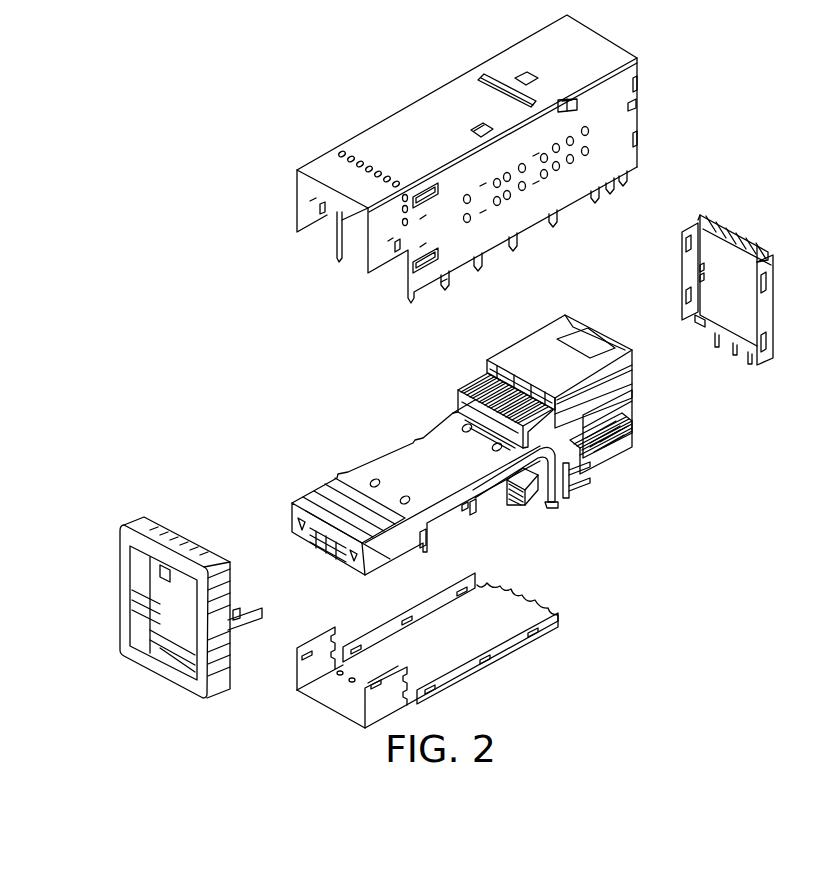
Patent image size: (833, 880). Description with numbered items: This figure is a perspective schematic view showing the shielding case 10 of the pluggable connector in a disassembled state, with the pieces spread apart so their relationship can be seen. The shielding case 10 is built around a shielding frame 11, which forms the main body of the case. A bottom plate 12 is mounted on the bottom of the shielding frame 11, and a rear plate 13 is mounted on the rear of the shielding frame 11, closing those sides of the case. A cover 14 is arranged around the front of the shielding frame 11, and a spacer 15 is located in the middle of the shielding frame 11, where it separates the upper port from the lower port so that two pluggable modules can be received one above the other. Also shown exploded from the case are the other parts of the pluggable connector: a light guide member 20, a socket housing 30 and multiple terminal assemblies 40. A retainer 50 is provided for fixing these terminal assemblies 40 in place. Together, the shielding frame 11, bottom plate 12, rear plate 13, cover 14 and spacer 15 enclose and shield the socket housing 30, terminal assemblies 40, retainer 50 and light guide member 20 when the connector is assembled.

The shielding case 10 is at (421, 88).
The shielding frame 11 is at (377, 135).
The bottom plate 12 is at (503, 613).
The rear plate 13 is at (730, 278).
The cover 14 is at (128, 522).
The spacer 15 is at (417, 467).
The light guide member 20 is at (505, 505).
The socket housing 30 is at (518, 335).
The terminal assemblies 40 is at (620, 412).
The retainer 50 is at (620, 460).